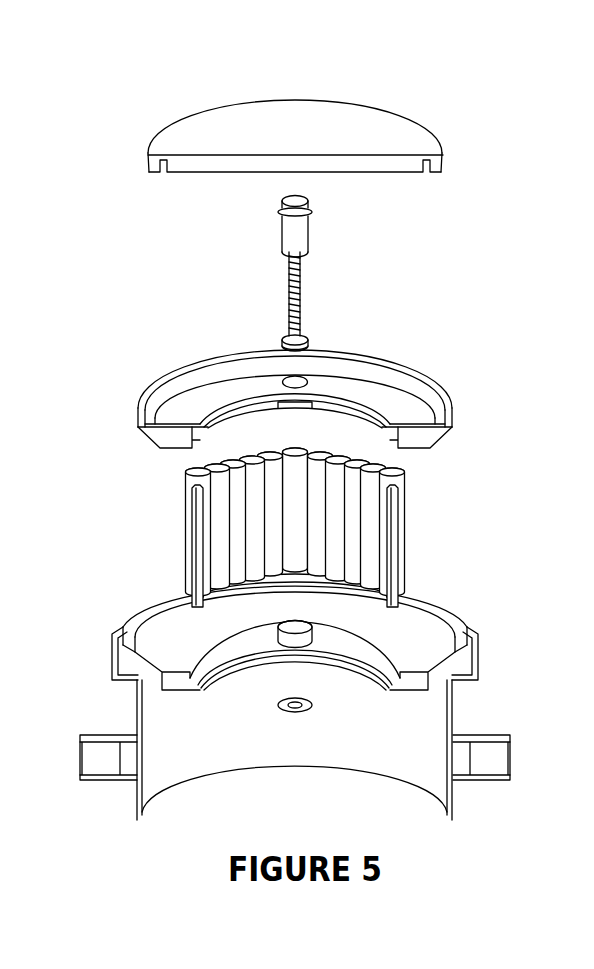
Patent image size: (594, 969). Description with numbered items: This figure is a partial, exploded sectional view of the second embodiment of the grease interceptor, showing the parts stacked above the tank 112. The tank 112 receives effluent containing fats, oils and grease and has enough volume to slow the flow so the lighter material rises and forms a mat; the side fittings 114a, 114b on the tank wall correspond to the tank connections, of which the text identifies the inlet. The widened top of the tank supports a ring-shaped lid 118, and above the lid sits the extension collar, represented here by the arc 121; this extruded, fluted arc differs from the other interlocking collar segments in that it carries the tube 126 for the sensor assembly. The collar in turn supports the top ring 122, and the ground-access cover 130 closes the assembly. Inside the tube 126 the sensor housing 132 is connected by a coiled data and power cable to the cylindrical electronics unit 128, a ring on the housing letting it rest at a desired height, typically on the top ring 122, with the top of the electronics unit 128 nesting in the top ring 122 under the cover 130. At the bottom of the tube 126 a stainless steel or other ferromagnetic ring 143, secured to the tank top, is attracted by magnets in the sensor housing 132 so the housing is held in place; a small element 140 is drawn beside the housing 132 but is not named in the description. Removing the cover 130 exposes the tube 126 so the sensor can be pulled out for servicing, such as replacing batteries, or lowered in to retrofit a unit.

The ground-access cover 130 is at (272, 118).
The cylindrical electronics unit 128 is at (283, 228).
The sensor housing 132 is at (282, 345).
The washer 140 is at (310, 345).
The top ring 122 is at (452, 420).
The tube 126 is at (292, 482).
The fourth arc 121 is at (393, 522).
The ring-shaped lid 118 is at (435, 614).
The ferromagnetic metal ring 143 is at (283, 706).
The tank 112 is at (192, 757).
The mounting tab 114a is at (102, 780).
The mounting tab 114b is at (503, 780).